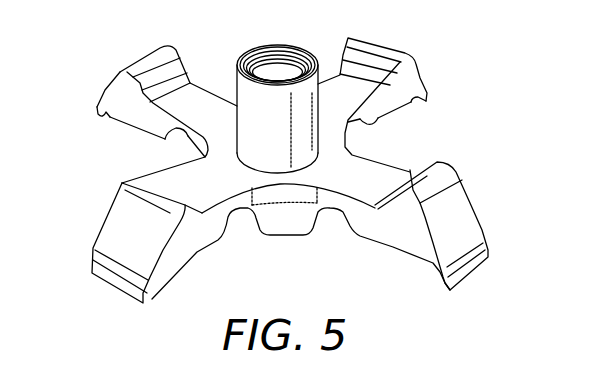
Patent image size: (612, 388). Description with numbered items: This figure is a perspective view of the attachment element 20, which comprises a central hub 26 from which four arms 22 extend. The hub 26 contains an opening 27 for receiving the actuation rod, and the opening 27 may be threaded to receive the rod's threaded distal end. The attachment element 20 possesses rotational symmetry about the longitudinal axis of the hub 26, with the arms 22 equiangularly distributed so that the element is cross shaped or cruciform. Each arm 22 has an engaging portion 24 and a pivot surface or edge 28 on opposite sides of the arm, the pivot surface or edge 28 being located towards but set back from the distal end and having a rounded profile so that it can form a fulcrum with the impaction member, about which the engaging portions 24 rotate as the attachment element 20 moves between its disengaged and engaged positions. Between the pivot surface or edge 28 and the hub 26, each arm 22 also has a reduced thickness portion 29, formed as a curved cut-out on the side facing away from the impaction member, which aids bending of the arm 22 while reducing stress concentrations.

The attachment element 20 is at (276, 171).
The arm 22 is at (347, 73).
The engaging portion 24 is at (97, 112).
The hub 26 is at (305, 149).
The opening 27 is at (274, 62).
The pivot surface or edge 28 is at (141, 57).
The reduced thickness portion 29 is at (183, 138).